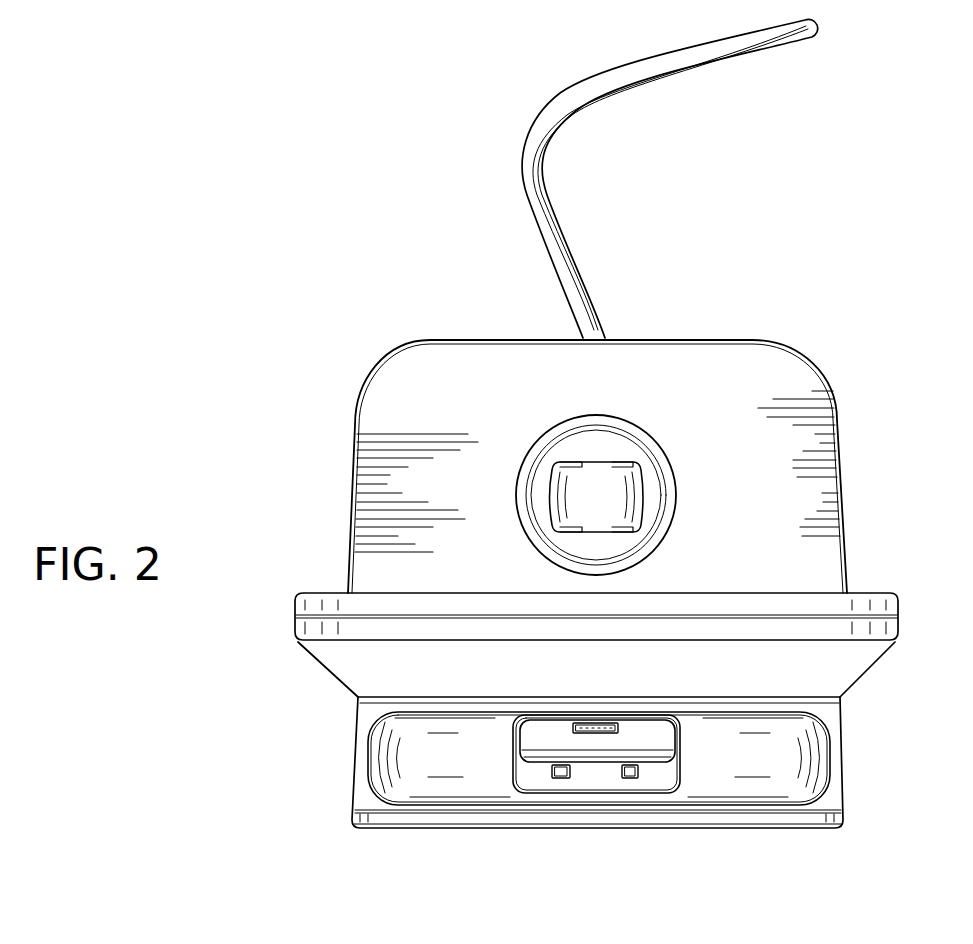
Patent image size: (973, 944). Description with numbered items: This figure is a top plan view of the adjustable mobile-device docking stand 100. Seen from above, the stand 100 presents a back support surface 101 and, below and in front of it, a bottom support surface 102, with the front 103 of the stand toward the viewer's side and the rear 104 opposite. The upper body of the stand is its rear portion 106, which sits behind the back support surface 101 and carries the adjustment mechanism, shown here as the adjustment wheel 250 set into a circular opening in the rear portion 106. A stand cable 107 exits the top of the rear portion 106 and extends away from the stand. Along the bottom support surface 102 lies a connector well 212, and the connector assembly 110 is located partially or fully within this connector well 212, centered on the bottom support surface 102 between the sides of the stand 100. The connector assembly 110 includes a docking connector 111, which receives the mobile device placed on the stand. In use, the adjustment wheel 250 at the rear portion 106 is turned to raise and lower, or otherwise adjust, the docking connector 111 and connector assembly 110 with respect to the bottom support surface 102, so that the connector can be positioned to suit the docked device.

The adjustable mobile-device docking stand 100 is at (302, 292).
The back support surface 101 is at (335, 650).
The bottom support surface 102 is at (807, 752).
The front 103 is at (695, 818).
The rear 104 is at (693, 338).
The rear portion 106 is at (783, 486).
The stand cable 107 is at (627, 85).
The connector assembly 110 is at (535, 738).
The docking connector 111 is at (598, 735).
The connector well 212 is at (630, 780).
The adjustment wheel 250 is at (605, 489).